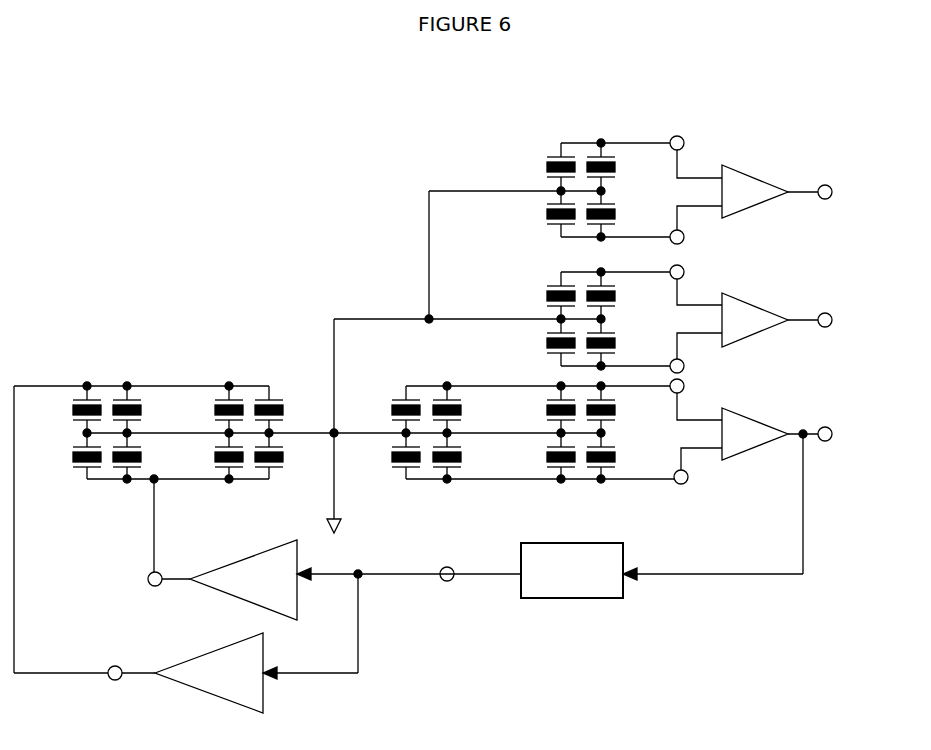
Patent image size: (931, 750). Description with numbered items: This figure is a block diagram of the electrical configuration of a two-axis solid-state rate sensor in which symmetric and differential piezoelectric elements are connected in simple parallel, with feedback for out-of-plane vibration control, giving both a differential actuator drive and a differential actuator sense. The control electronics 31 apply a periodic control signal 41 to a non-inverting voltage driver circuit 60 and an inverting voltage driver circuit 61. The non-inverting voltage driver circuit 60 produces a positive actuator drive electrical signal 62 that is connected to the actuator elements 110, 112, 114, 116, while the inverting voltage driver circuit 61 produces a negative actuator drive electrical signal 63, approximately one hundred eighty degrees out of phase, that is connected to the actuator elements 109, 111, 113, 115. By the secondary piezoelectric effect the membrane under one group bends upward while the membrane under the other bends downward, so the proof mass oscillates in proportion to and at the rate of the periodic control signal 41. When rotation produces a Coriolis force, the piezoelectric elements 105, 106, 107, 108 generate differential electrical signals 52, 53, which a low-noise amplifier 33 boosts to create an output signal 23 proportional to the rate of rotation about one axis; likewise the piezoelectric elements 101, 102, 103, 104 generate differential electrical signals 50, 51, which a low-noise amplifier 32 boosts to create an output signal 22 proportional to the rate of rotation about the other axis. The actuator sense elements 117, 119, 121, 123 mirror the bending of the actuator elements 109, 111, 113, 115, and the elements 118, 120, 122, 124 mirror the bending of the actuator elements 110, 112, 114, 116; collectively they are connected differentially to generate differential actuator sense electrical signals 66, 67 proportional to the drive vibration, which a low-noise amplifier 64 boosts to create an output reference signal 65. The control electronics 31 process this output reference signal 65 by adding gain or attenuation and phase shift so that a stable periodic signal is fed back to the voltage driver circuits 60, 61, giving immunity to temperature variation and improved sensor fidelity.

The piezoelectric element 101 is at (545, 171).
The piezoelectric element 102 is at (545, 213).
The piezoelectric element 103 is at (616, 214).
The piezoelectric element 104 is at (616, 171).
The piezoelectric element 105 is at (545, 300).
The piezoelectric element 106 is at (545, 341).
The piezoelectric element 107 is at (616, 342).
The piezoelectric element 108 is at (616, 300).
The actuator element 109 is at (72, 412).
The actuator element 110 is at (72, 458).
The actuator element 111 is at (142, 413).
The actuator element 112 is at (142, 460).
The actuator element 113 is at (214, 408).
The actuator element 114 is at (214, 454).
The actuator element 115 is at (284, 414).
The actuator element 116 is at (284, 456).
The actuator sense element 117 is at (391, 409).
The actuator sense element 118 is at (391, 455).
The actuator sense element 119 is at (461, 409).
The actuator sense element 120 is at (461, 456).
The actuator sense element 121 is at (546, 410).
The actuator sense element 122 is at (546, 457).
The actuator sense element 123 is at (616, 412).
The actuator sense element 124 is at (616, 457).
The differential electrical signal 50 is at (684, 141).
The differential electrical signal 51 is at (684, 240).
The differential electrical signal 52 is at (684, 270).
The differential electrical signal 53 is at (684, 367).
The differential actuator sense electrical signal 66 is at (684, 388).
The differential actuator sense electrical signal 67 is at (686, 483).
The output signal 22 is at (830, 187).
The output signal 23 is at (830, 315).
The output reference signal 65 is at (830, 429).
The low-noise amplifier 32 is at (747, 175).
The low-noise amplifier 33 is at (747, 303).
The low-noise amplifier 64 is at (747, 418).
The non-inverting voltage driver circuit 60 is at (273, 560).
The inverting voltage driver circuit 61 is at (236, 652).
The positive actuator drive electrical signal 62 is at (149, 574).
The negative actuator drive electrical signal 63 is at (110, 667).
The periodic control signal 41 is at (441, 582).
The control electronics 31 is at (575, 592).